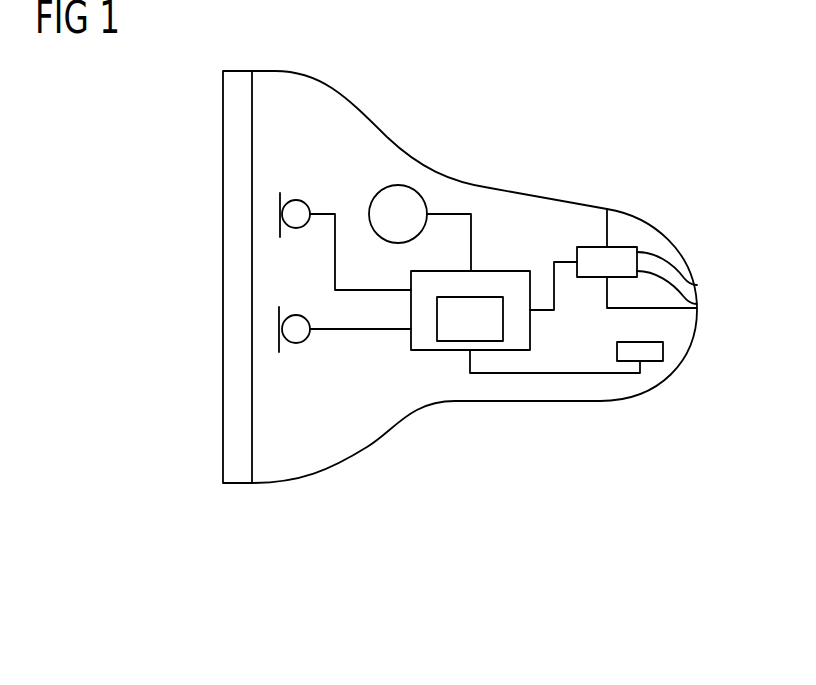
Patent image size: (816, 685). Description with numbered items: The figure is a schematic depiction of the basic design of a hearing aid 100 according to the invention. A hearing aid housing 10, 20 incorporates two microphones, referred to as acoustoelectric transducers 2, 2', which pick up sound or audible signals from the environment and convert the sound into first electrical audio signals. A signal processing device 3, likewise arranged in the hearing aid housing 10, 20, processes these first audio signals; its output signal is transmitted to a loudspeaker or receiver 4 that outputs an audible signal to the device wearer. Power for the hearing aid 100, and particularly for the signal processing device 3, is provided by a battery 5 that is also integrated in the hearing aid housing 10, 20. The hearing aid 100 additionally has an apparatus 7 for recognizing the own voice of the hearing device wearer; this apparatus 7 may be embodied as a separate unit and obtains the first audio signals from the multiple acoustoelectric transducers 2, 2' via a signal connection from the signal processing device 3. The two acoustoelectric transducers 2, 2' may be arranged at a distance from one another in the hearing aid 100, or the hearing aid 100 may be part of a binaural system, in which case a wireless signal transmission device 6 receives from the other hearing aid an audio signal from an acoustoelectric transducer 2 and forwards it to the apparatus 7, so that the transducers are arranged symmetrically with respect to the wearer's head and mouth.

The hearing aid 100 is at (605, 52).
The hearing aid housing 10 is at (237, 101).
The hearing aid housing 20 is at (533, 401).
The acoustoelectric transducer 2 is at (304, 241).
The acoustoelectric transducer 2' is at (300, 329).
The battery 5 is at (373, 195).
The signal processing device 3 is at (502, 271).
The apparatus for recognizing the own voice 7 is at (452, 350).
The receiver 4 is at (620, 247).
The wireless signal transmission device 6 is at (663, 352).